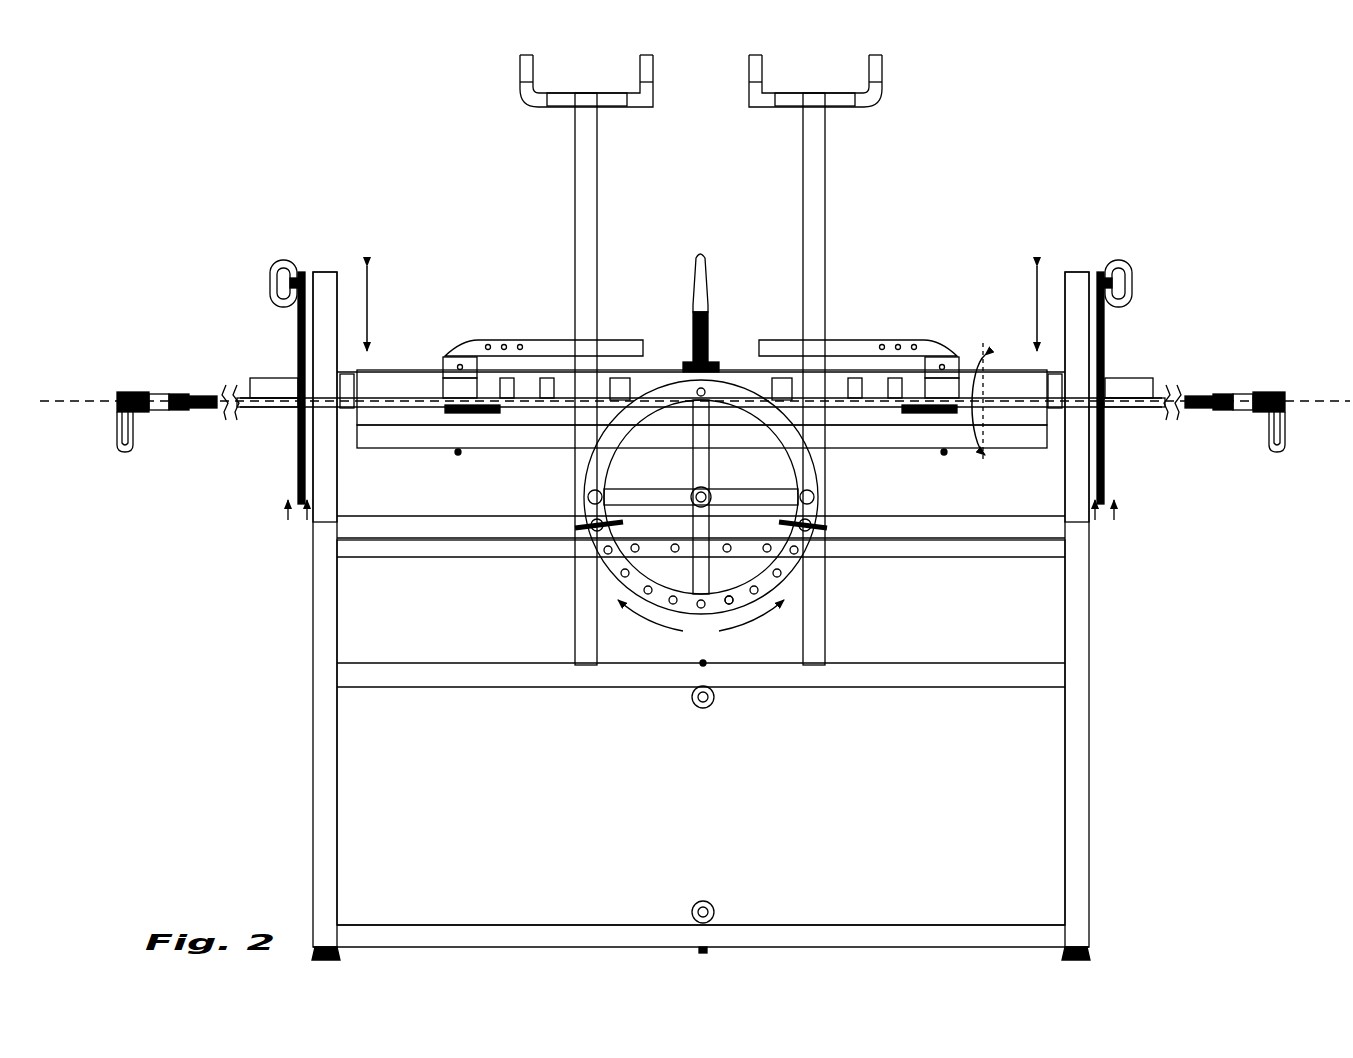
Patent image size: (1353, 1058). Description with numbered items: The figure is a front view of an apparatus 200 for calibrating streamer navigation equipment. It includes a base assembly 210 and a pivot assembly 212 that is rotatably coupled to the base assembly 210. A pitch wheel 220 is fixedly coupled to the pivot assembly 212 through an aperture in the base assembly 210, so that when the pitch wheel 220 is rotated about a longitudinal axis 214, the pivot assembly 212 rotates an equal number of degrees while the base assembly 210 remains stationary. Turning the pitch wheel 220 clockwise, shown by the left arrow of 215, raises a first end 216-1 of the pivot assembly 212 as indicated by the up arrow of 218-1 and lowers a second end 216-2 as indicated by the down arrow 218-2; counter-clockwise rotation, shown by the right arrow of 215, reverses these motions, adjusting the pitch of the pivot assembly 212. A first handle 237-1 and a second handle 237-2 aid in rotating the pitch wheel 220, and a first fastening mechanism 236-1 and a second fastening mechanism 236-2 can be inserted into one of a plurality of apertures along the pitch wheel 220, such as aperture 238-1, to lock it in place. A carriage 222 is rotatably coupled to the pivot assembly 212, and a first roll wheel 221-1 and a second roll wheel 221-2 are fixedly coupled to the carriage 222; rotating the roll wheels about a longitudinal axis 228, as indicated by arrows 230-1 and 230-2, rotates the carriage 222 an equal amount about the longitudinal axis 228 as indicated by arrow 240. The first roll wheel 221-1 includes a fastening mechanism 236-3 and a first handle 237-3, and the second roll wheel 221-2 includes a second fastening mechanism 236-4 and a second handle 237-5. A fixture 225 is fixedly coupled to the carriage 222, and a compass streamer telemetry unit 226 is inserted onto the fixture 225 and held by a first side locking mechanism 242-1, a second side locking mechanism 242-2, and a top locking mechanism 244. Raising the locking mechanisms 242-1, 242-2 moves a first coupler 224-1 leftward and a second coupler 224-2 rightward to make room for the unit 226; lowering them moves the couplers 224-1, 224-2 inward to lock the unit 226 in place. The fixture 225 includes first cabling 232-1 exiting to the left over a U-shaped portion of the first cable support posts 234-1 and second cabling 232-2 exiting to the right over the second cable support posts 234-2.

The apparatus 200 is at (346, 158).
The base assembly 210 is at (314, 712).
The pivot assembly 212 is at (320, 478).
The longitudinal axis 214 is at (688, 492).
The arrows 215 is at (701, 623).
The first end 216-1 is at (326, 278).
The second end 216-2 is at (1077, 278).
The up and down arrow 218-1 is at (364, 308).
The up and down arrow 218-2 is at (1036, 308).
The pitch wheel 220 is at (808, 462).
The first roll wheel 221-1 is at (1104, 350).
The second roll wheel 221-2 is at (298, 350).
The carriage 222 is at (390, 452).
The first coupler 224-1 is at (608, 368).
The second coupler 224-2 is at (800, 382).
The fixture 225 is at (458, 452).
The compass streamer telemetry unit (CSTU) 226 is at (732, 378).
The longitudinal axis 228 is at (72, 395).
The arrow 230-1 is at (1104, 522).
The arrow 230-2 is at (298, 522).
The first cabling 232-1 is at (147, 392).
The second cabling 232-2 is at (1255, 392).
The first cable support posts 234-1 is at (570, 95).
The second cable support posts 234-2 is at (832, 95).
The first fastening mechanism 236-1 is at (575, 535).
The second fastening mechanism 236-2 is at (830, 535).
The fastening mechanism 236-3 is at (1120, 260).
The second fastening mechanism 236-4 is at (282, 260).
The first handle 237-1 is at (588, 497).
The second handle 237-2 is at (814, 497).
The first handle 237-3 is at (1140, 410).
The second handle 237-5 is at (262, 410).
The aperture 238-1 is at (740, 604).
The arrow 240 is at (977, 462).
The first side locking mechanism 242-1 is at (628, 345).
The second side locking mechanism 242-2 is at (766, 345).
The top locking mechanism 244 is at (702, 250).